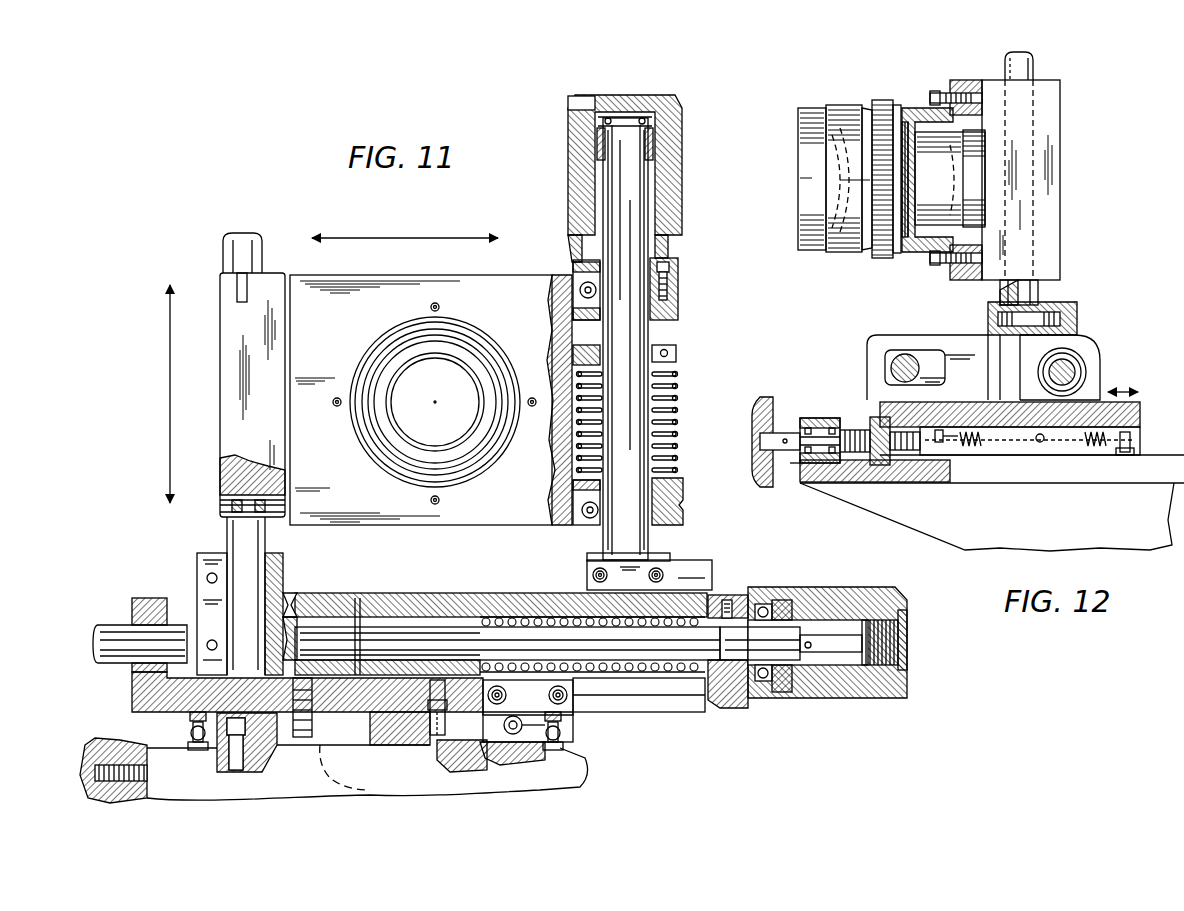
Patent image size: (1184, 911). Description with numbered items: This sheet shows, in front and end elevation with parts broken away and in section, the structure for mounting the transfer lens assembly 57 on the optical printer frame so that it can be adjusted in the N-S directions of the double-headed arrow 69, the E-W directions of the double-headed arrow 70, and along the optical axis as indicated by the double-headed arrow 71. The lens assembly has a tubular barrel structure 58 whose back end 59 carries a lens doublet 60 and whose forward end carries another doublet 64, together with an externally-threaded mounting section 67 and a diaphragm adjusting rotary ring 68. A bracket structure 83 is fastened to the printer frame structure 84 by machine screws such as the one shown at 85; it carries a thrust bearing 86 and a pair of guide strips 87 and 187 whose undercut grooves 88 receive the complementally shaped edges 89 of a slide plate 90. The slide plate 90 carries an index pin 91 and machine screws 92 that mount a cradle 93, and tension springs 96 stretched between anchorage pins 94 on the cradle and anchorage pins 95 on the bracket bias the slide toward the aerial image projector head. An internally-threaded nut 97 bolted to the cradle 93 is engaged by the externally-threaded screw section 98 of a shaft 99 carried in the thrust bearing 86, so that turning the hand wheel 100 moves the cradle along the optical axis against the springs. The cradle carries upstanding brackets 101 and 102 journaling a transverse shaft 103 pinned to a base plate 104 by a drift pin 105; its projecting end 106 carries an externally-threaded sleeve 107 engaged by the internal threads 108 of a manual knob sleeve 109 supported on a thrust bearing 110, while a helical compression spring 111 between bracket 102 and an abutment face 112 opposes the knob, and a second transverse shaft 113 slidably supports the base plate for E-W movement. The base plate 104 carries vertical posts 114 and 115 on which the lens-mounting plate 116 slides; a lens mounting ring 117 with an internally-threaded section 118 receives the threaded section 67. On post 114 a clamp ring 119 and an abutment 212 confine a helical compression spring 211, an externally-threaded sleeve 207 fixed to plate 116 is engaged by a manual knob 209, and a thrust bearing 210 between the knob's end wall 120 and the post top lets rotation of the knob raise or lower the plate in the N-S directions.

In FIG. 11, the transfer lens assembly 57 is at (393, 332).
In FIG. 12, the transfer lens assembly 57 is at (850, 262).
In FIG. 12, the tubular barrel structure 58 is at (843, 108).
In FIG. 12, the back end 59 is at (975, 134).
In FIG. 12, the lens doublet 60 is at (925, 252).
In FIG. 11, the doublet 64 is at (445, 368).
In FIG. 12, the doublet 64 is at (820, 250).
In FIG. 12, the externally-threaded mounting section 67 is at (908, 120).
In FIG. 12, the diaphragm adjusting rotary ring 68 is at (884, 100).
In FIG. 11, the double-headed arrow 69 is at (167, 392).
In FIG. 11, the double-headed arrow 70 is at (412, 236).
In FIG. 12, the double-headed arrow 71 is at (1120, 390).
In FIG. 11, the bracket structure 83 is at (430, 780).
In FIG. 12, the bracket structure 83 is at (1005, 525).
In FIG. 11, the printer frame structure 84 is at (95, 755).
In FIG. 11, the machine screw 85 is at (115, 755).
In FIG. 12, the thrust bearing 86 is at (810, 420).
In FIG. 11, the guide strip 87 is at (262, 750).
In FIG. 11, the undercut longitudinally-extending grooves 88 is at (272, 760).
In FIG. 11, the edges 89 is at (262, 720).
In FIG. 11, the slide plate 90 is at (392, 735).
In FIG. 11, the index pin 91 is at (430, 738).
In FIG. 11, the machine screws 92 is at (305, 676).
In FIG. 11, the cradle 93 is at (262, 690).
In FIG. 12, the cradle 93 is at (1130, 412).
In FIG. 11, the anchorage pins 94 is at (188, 718).
In FIG. 12, the anchorage pins 94 is at (940, 428).
In FIG. 11, the anchorage pins 95 is at (190, 750).
In FIG. 12, the anchorage pins 95 is at (1127, 455).
In FIG. 11, the biasing tension springs 96 is at (190, 733).
In FIG. 12, the biasing tension springs 96 is at (1095, 448).
In FIG. 12, the internally-threaded nut 97 is at (865, 465).
In FIG. 12, the externally-threaded screw section 98 is at (848, 428).
In FIG. 12, the shaft 99 is at (795, 465).
In FIG. 11, the hand wheel 100 is at (312, 778).
In FIG. 12, the hand wheel 100 is at (752, 470).
In FIG. 11, the upstanding bracket 101 is at (142, 597).
In FIG. 11, the upstanding bracket 102 is at (735, 597).
In FIG. 12, the upstanding bracket 102 is at (1076, 368).
In FIG. 11, the transverse shaft 103 is at (112, 627).
In FIG. 12, the transverse shaft 103 is at (1080, 355).
In FIG. 11, the base plate 104 is at (405, 607).
In FIG. 11, the drift pin 105 is at (360, 597).
In FIG. 11, the end of transverse shaft 106 is at (795, 630).
In FIG. 11, the externally-threaded sleeve 107 is at (893, 690).
In FIG. 11, the internal threads 108 is at (860, 612).
In FIG. 11, the manual knob sleeve 109 is at (828, 690).
In FIG. 11, the thrust bearing 110 is at (775, 695).
In FIG. 11, the helical compression spring 111 is at (655, 672).
In FIG. 11, the abutment face 112 is at (508, 612).
In FIG. 12, the second transverse shaft 113 is at (888, 370).
In FIG. 11, the vertical post 114 is at (640, 332).
In FIG. 12, the vertical post 114 is at (1040, 298).
In FIG. 11, the vertical post 115 is at (236, 236).
In FIG. 12, the vertical post 115 is at (1030, 60).
In FIG. 11, the lens-mounting plate 116 is at (503, 283).
In FIG. 12, the lens-mounting plate 116 is at (945, 80).
In FIG. 12, the lens mounting ring 117 is at (945, 92).
In FIG. 12, the internally-threaded section 118 is at (910, 250).
In FIG. 11, the clamp ring 119 is at (668, 362).
In FIG. 11, the outer transverse end wall 120 is at (618, 92).
In FIG. 11, the guide strip 187 is at (510, 762).
In FIG. 11, the externally-threaded sleeve 207 is at (662, 196).
In FIG. 11, the manual knob 209 is at (675, 162).
In FIG. 11, the thrust bearing 210 is at (645, 110).
In FIG. 11, the helical compression spring 211 is at (676, 440).
In FIG. 11, the abutment 212 is at (676, 480).